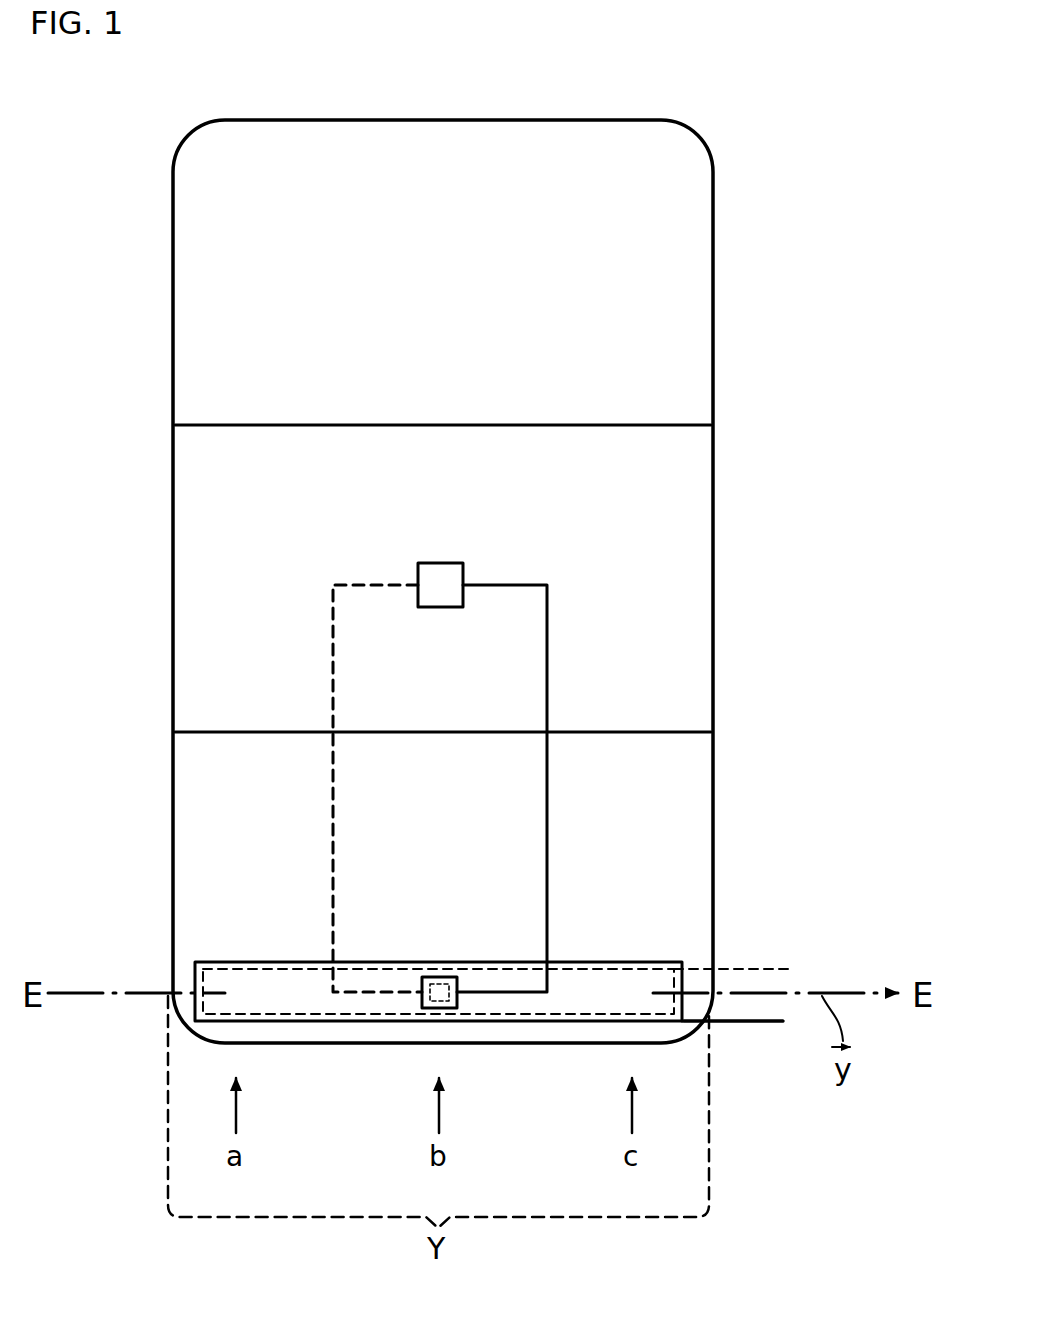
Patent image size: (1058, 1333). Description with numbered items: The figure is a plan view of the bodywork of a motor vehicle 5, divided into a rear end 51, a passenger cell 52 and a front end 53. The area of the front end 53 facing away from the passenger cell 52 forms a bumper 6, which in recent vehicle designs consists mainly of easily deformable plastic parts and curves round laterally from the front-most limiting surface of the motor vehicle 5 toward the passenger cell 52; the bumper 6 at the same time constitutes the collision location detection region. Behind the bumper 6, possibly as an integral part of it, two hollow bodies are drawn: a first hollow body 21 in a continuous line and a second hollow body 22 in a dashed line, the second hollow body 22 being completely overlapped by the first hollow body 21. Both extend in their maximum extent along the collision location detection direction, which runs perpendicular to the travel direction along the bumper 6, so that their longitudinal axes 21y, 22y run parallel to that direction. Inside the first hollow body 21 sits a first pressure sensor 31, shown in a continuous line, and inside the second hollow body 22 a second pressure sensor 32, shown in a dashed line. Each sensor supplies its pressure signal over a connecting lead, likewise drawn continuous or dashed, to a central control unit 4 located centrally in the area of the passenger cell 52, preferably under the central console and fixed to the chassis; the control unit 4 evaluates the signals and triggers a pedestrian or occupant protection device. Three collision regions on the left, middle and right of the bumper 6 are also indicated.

The central control unit 4 is at (443, 577).
The motor vehicle 5 is at (646, 88).
The bumper 6 is at (465, 1044).
The first hollow body 21 is at (567, 1022).
The second hollow body 22 is at (285, 1018).
The longitudinal axis of the first hollow body 21y is at (748, 1024).
The longitudinal axis of the second hollow body 22y is at (758, 967).
The first pressure sensor 31 is at (450, 985).
The second pressure sensor 32 is at (438, 990).
The rear end 51 is at (704, 285).
The passenger cell 52 is at (702, 586).
The front end 53 is at (702, 857).